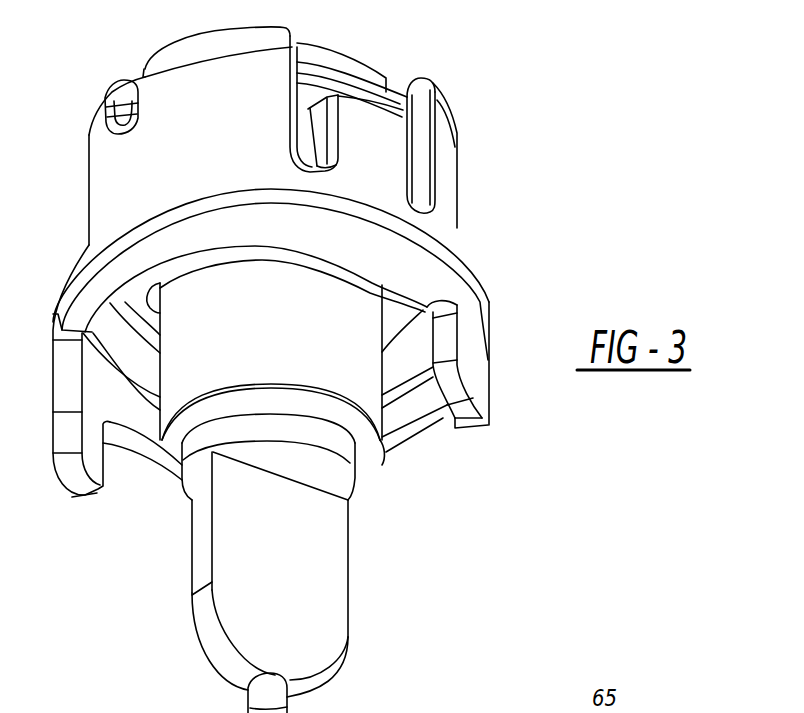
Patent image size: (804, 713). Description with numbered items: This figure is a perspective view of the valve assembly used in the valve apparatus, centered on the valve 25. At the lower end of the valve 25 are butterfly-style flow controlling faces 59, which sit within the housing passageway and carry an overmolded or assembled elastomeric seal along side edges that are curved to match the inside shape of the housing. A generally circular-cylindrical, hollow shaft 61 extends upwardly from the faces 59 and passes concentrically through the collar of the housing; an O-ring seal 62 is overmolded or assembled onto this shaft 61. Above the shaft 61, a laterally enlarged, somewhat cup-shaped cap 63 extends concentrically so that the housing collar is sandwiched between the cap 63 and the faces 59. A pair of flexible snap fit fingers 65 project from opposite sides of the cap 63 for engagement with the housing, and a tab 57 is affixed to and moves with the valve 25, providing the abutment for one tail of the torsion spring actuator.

The valve 25 is at (323, 538).
The tab 57 is at (443, 340).
The flow controlling faces 59 is at (296, 579).
The shaft 61 is at (288, 326).
The O-ring seal 62 is at (168, 448).
The cap 63 is at (230, 128).
The snap fit fingers 65 is at (312, 108).